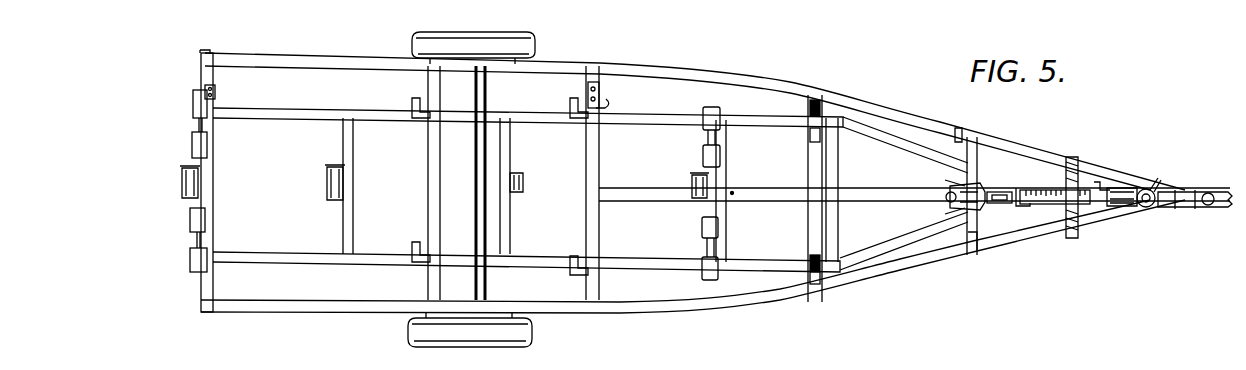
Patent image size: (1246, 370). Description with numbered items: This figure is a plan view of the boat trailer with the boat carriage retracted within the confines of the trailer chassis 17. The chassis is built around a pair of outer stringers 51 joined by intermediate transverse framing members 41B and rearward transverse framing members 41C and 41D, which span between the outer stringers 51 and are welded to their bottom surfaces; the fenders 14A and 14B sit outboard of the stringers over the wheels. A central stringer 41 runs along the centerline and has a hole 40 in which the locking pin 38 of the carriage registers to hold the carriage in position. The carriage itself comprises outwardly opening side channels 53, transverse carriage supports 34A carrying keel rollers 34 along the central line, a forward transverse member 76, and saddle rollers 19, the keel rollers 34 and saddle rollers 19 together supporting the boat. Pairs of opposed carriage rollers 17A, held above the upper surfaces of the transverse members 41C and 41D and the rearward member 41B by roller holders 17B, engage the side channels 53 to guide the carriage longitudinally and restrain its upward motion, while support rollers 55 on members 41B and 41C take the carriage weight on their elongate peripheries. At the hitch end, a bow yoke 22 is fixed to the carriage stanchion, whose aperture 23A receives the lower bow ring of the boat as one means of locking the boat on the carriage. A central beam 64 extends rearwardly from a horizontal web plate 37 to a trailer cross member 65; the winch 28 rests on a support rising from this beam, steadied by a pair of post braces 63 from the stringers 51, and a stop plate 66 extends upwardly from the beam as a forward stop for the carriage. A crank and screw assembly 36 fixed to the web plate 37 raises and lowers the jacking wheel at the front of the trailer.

The fender 14A is at (478, 335).
The fender 14B is at (410, 42).
The trailer chassis 17 is at (925, 285).
The carriage rollers 17A is at (612, 100).
The roller holders 17B is at (200, 85).
The saddle rollers 19 is at (191, 122).
The bow yoke 22 is at (988, 165).
The aperture 23A is at (1000, 190).
The winch 28 is at (1132, 190).
The keel rollers 34 is at (182, 188).
The transverse carriage supports 34A is at (212, 178).
The crank and screw assembly 36 is at (1160, 192).
The horizontal web plate 37 is at (1153, 208).
The locking pin 38 is at (940, 192).
The hole 40 is at (735, 195).
The central stringer 41 is at (866, 200).
The intermediate transverse framing members 41B is at (810, 218).
The rearward transverse framing member 41C is at (420, 296).
The rearward transverse framing member 41D is at (215, 290).
The outer stringers 51 is at (855, 98).
The side channels 53 is at (748, 108).
The support rollers 55 is at (412, 103).
The post braces 63 is at (1080, 175).
The central beam 64 is at (1018, 207).
The trailer cross member 65 is at (958, 140).
The stop plate 66 is at (980, 262).
The forward transverse member 76 is at (840, 157).